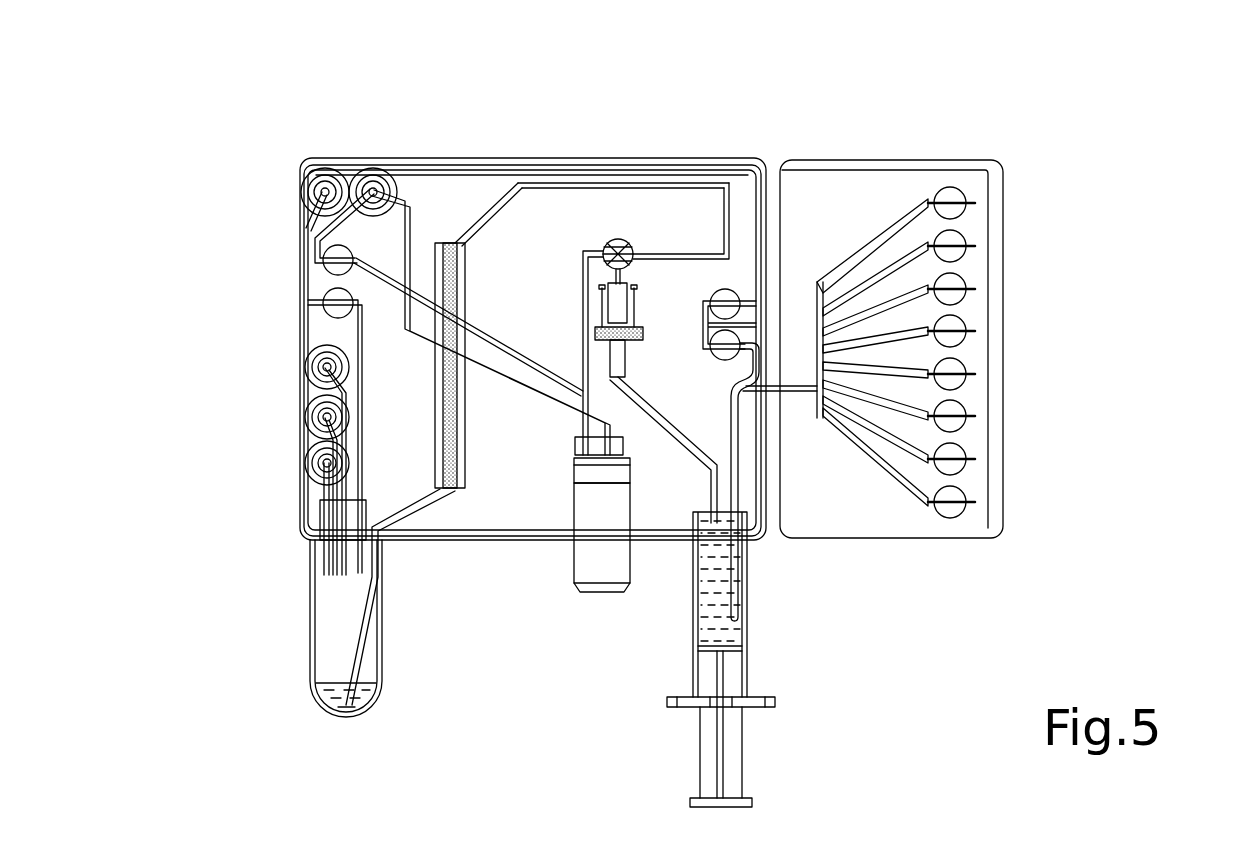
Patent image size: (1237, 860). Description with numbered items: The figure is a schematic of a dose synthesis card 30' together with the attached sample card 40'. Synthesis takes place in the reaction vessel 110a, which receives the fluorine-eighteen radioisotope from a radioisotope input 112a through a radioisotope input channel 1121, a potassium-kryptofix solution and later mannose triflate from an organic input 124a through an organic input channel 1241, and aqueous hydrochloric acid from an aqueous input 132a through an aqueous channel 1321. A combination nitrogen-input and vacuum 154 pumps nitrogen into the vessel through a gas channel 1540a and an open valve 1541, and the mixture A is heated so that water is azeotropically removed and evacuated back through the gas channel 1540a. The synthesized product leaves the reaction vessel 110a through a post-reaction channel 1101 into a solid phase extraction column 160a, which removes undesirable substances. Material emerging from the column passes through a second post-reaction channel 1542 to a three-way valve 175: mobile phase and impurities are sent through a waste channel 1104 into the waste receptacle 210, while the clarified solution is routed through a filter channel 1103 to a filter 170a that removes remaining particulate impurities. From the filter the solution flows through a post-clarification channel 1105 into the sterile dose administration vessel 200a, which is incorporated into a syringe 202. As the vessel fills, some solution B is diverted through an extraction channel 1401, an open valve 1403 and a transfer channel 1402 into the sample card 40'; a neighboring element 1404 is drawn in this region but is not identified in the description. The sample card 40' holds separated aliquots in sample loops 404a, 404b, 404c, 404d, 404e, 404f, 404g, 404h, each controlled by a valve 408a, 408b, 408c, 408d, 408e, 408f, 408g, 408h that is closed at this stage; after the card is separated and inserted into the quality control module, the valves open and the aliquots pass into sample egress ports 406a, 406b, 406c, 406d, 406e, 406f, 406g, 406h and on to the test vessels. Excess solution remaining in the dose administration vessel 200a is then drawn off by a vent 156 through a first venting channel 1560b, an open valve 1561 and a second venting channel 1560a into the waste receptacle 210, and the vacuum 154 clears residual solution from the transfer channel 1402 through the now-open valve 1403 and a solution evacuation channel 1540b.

The dose synthesis card 30' is at (533, 279).
The sample card 40' is at (891, 278).
The combination nitrogen-input and vacuum 154 is at (317, 167).
The vent 156 is at (360, 177).
The open valve 1561 is at (303, 207).
The valve 1541 is at (303, 318).
The gas channel 1540a is at (303, 242).
The solution evacuation channel 1540b is at (437, 173).
The second venting channel 1560a is at (405, 332).
The first venting channel 1560b is at (485, 182).
The three-way valve 175 is at (597, 172).
The filter channel 1103 is at (602, 262).
The waste channel 1104 is at (582, 313).
The post-clarification channel 1105 is at (745, 455).
The open valve 1403 is at (722, 290).
The chamber frame channel 1404 is at (705, 318).
The transfer channel 1402 is at (725, 368).
The extraction channel 1401 is at (780, 415).
The second post-reaction channel 1542 is at (787, 170).
The filter 170a is at (548, 440).
The post-reaction channel 1101 is at (368, 643).
The reaction vessel 110a is at (333, 663).
The mixture A is at (358, 700).
The solid phase extraction column 160a is at (440, 472).
The radioisotope input 112a is at (303, 347).
The radioisotope input channel 1121 is at (303, 378).
The aqueous input 132a is at (303, 407).
The aqueous channel 1321 is at (303, 432).
The organic input 124a is at (303, 453).
The organic input channel 1241 is at (303, 490).
The waste receptacle 210 is at (610, 585).
The sterile dose administration vessel 200a is at (748, 622).
The solution B is at (703, 627).
The syringe 202 is at (775, 707).
The sample loop 404a is at (888, 232).
The sample loop 404b is at (885, 262).
The sample loop 404c is at (855, 305).
The sample loop 404d is at (838, 347).
The sample loop 404e is at (840, 360).
The sample loop 404f is at (833, 383).
The sample loop 404g is at (907, 485).
The sample loop 404h is at (862, 422).
The valve 408a is at (965, 194).
The valve 408b is at (965, 237).
The valve 408c is at (965, 279).
The valve 408d is at (965, 322).
The valve 408e is at (965, 365).
The valve 408f is at (965, 407).
The valve 408g is at (965, 450).
The valve 408h is at (965, 493).
The sample egress port 406a is at (975, 203).
The sample egress port 406b is at (975, 246).
The sample egress port 406c is at (975, 289).
The sample egress port 406d is at (975, 331).
The sample egress port 406e is at (975, 374).
The sample egress port 406f is at (975, 416).
The sample egress port 406g is at (975, 459).
The sample egress port 406h is at (975, 502).